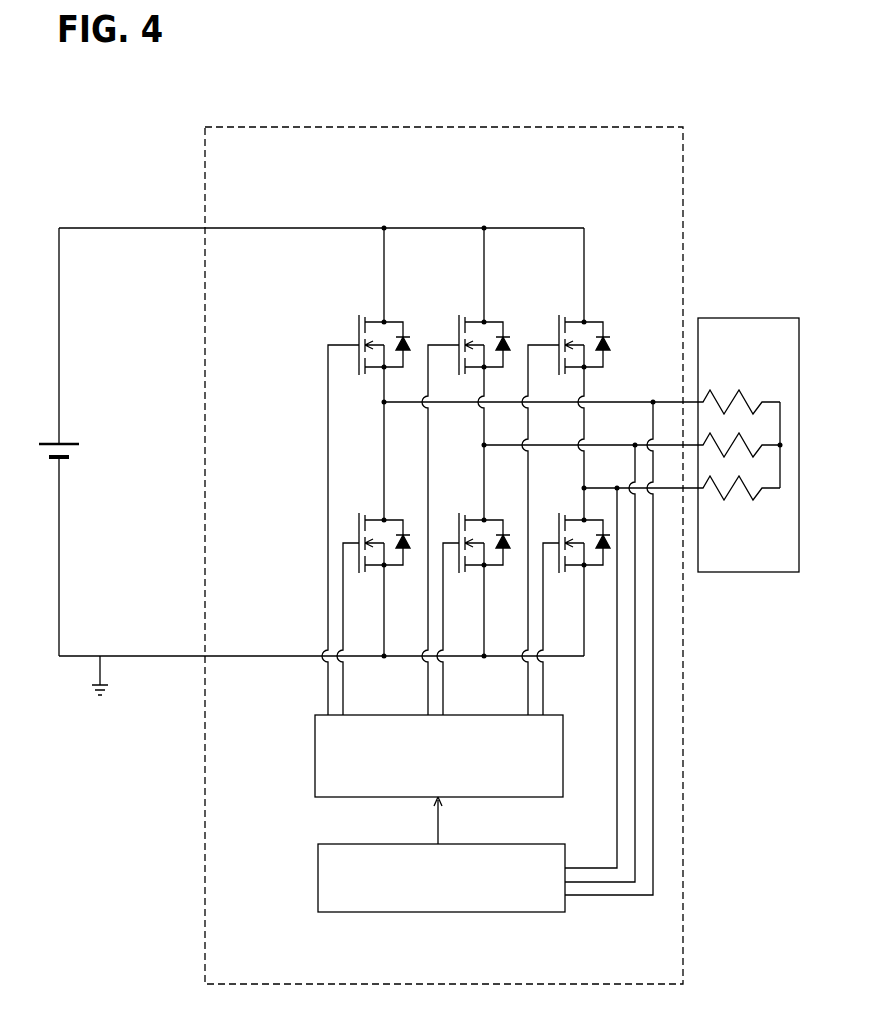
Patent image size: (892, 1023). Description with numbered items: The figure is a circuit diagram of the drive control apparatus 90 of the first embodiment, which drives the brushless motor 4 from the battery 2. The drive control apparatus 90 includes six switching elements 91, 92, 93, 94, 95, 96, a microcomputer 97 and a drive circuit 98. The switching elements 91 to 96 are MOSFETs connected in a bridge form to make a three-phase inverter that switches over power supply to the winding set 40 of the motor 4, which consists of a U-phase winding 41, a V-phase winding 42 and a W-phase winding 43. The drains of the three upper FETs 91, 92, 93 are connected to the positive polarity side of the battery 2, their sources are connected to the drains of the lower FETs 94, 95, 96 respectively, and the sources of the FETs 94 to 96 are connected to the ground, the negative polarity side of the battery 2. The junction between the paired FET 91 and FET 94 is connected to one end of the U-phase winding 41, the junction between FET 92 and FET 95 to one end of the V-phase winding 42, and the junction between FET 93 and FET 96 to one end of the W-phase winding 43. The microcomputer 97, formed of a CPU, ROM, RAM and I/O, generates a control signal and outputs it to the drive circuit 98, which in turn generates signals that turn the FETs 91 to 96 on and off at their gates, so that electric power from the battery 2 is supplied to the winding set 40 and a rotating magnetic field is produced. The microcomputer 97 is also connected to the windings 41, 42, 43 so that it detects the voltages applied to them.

The battery 2 is at (67, 441).
The brushless motor 4 is at (757, 318).
The winding set 40 is at (744, 520).
The U-phase winding 41 is at (721, 398).
The V-phase winding 42 is at (753, 440).
The W-phase winding 43 is at (752, 497).
The drive control apparatus 90 is at (683, 212).
The switching element 91 is at (396, 325).
The switching element 92 is at (500, 325).
The switching element 93 is at (601, 326).
The switching element 94 is at (395, 513).
The switching element 95 is at (496, 513).
The switching element 96 is at (575, 513).
The microcomputer 97 is at (318, 880).
The drive circuit 98 is at (315, 757).